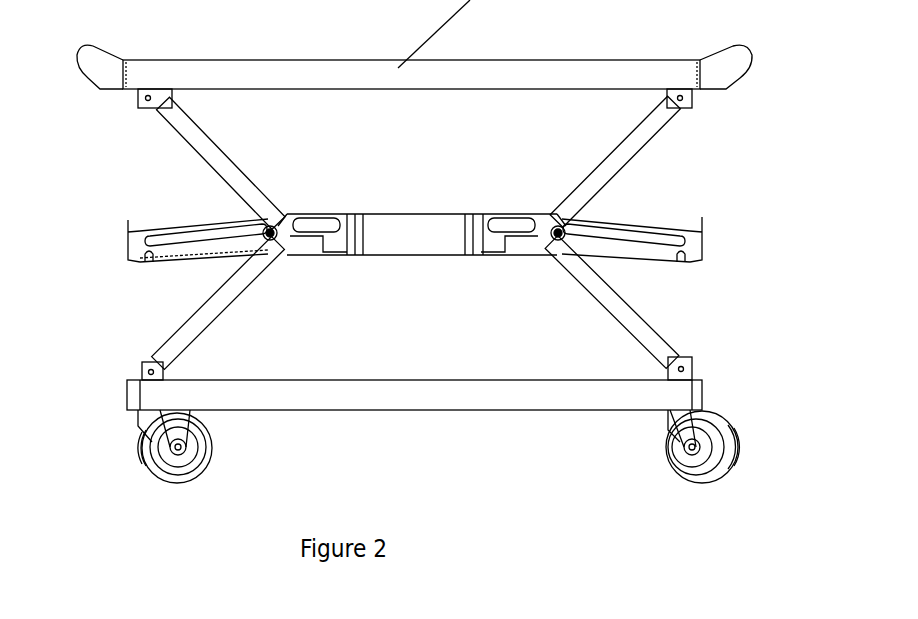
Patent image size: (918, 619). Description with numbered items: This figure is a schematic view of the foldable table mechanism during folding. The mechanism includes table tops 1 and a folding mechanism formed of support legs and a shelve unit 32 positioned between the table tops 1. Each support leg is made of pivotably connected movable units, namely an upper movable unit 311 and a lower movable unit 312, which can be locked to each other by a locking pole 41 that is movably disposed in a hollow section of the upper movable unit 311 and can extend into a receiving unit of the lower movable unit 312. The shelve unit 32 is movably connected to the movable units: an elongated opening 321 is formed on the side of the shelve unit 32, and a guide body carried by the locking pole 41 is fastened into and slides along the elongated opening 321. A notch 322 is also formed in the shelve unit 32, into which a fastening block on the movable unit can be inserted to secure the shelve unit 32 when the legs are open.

The table top 1 is at (452, 398).
The upper movable unit 311 is at (212, 157).
The lower movable unit 312 is at (195, 328).
The shelve unit 32 is at (382, 228).
The elongated opening 321 is at (160, 226).
The notch 322 is at (140, 260).
The locking pole 41 is at (290, 230).